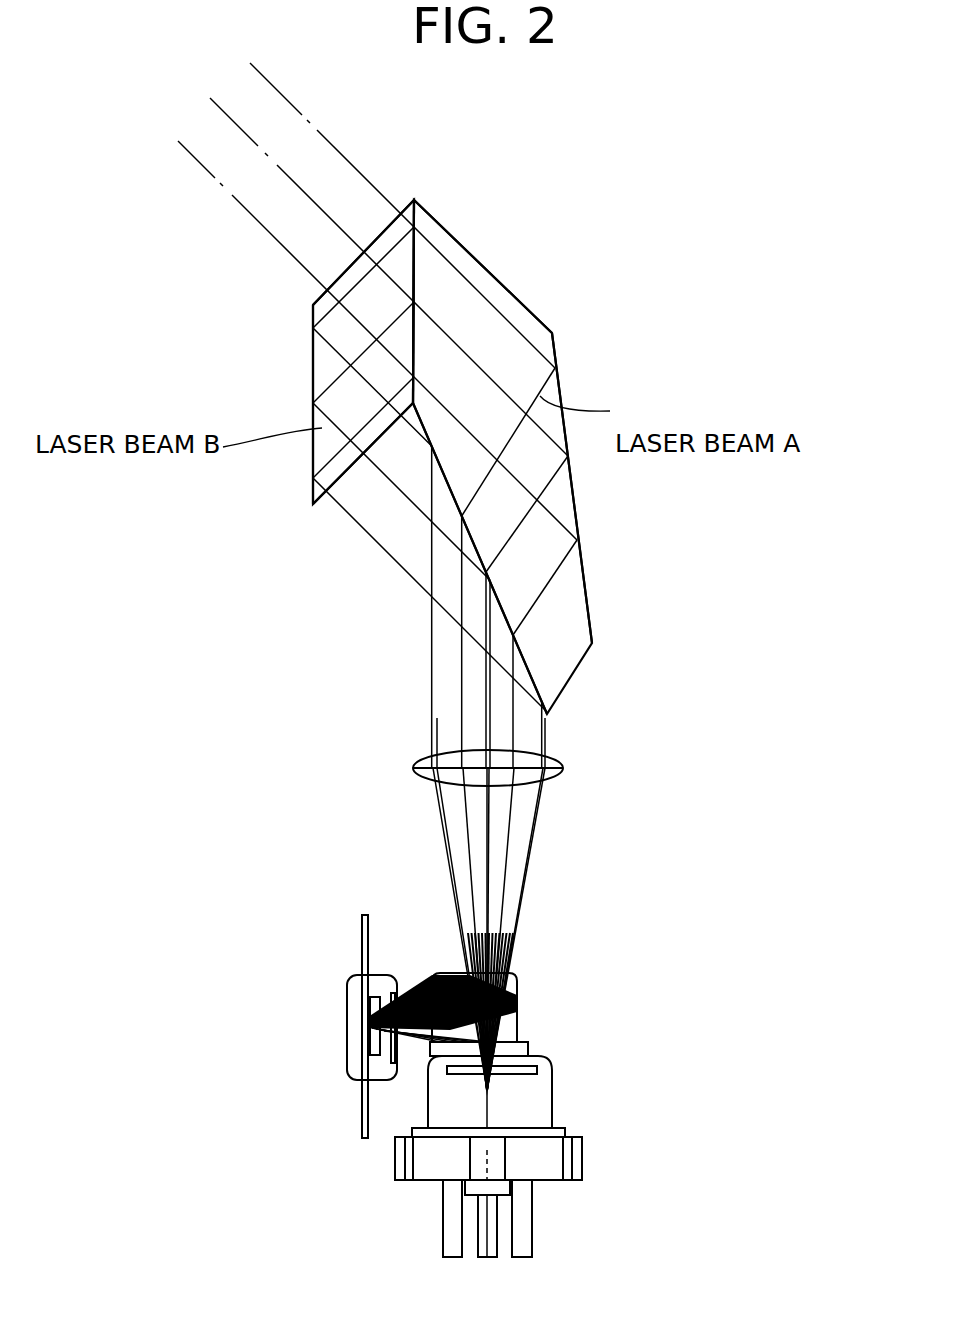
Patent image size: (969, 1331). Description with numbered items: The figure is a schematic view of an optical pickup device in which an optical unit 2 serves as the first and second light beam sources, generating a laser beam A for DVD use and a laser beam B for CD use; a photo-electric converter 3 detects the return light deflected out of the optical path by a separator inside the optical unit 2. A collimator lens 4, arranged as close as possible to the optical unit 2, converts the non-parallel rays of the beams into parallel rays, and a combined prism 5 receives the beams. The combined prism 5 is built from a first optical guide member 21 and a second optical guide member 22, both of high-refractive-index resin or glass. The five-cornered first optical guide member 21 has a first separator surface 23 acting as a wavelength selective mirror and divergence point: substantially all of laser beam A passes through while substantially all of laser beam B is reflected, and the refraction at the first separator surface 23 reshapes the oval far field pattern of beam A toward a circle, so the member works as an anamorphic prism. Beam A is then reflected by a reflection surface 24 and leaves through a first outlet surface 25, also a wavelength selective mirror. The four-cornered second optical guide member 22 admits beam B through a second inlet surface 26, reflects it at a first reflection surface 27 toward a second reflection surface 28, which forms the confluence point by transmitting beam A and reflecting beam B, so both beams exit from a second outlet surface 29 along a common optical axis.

The optical unit 2 is at (435, 1112).
The photo-electric converter 3 is at (346, 992).
The collimator lens 4 is at (413, 767).
The combined prism 5 is at (543, 189).
The first optical guide member 21 is at (473, 303).
The second optical guide member 22 is at (323, 371).
The first separator surface 23 is at (527, 668).
The reflection surface 24 is at (583, 578).
The first outlet surface 25 is at (415, 279).
The second inlet surface 26 is at (338, 485).
The first reflection surface 27 is at (322, 458).
The second reflection surface 28 is at (412, 250).
The second outlet surface 29 is at (347, 268).